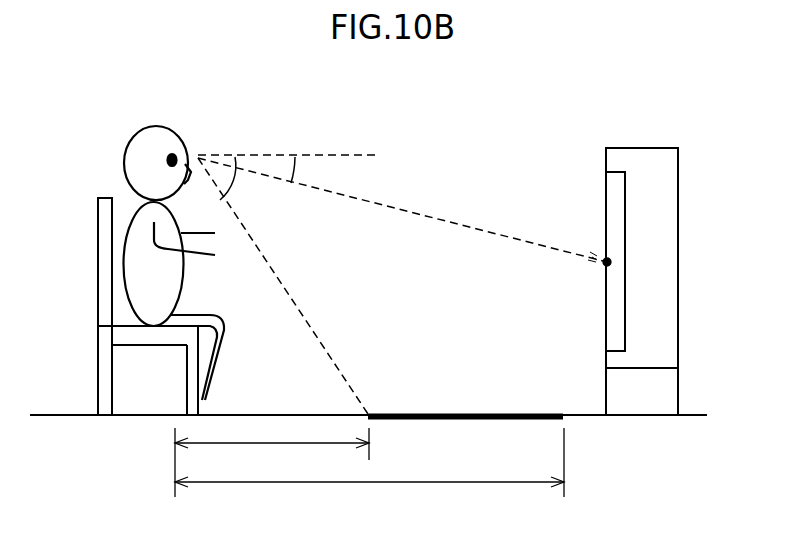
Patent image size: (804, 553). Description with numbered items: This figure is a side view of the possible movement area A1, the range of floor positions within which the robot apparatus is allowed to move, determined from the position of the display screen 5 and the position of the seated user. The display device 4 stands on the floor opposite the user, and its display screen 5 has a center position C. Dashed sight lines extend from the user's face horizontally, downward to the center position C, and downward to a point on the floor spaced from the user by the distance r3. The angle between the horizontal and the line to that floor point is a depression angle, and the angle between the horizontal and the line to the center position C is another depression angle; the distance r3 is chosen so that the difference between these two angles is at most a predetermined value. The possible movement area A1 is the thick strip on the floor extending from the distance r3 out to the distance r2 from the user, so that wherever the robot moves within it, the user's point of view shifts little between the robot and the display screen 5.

The display device 4 is at (678, 198).
The display screen 5 is at (625, 279).
The center position of the display screen C is at (603, 257).
The possible movement area A1 is at (486, 405).
The radius r2 is at (369, 473).
The radius r3 is at (272, 462).